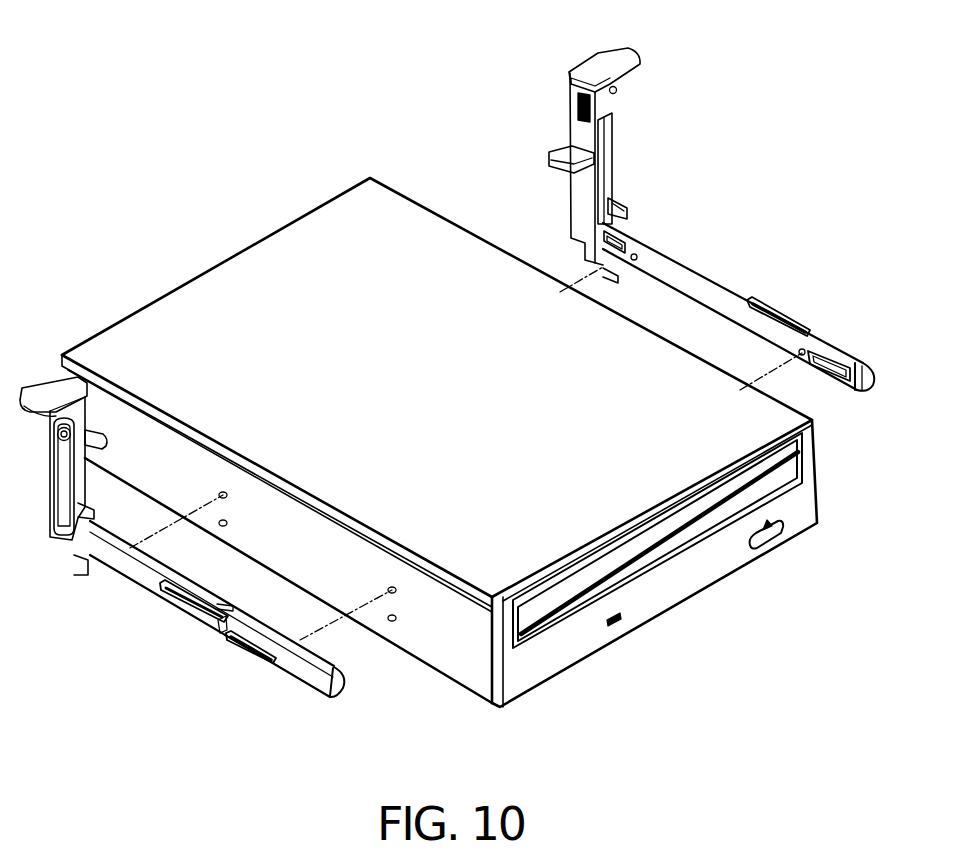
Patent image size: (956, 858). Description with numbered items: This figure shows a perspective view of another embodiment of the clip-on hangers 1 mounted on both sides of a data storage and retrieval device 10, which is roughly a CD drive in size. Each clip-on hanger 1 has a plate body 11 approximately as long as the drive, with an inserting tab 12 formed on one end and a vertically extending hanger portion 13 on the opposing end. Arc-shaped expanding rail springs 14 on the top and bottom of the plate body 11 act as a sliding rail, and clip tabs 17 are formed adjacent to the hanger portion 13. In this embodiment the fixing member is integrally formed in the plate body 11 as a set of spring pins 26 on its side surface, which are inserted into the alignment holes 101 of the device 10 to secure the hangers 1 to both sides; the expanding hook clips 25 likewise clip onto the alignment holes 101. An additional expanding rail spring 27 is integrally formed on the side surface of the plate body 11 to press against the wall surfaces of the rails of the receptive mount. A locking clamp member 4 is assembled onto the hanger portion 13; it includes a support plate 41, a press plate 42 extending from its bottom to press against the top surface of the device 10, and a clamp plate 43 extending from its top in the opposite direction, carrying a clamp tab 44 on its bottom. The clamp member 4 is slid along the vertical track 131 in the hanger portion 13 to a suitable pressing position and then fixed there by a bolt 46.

The clip-on hanger 1 is at (483, 477).
The locking clamp member 4 is at (368, 312).
The data storage and retrieval device 10 is at (228, 277).
The plate body 11 is at (683, 265).
The inserting tab 12 is at (873, 385).
The hanger portion 13 is at (583, 193).
The expanding rail springs 14 is at (780, 316).
The clip tabs 17 is at (612, 178).
The expanding hook clips 25 is at (597, 232).
The spring pins 26 is at (815, 365).
The expanding rail spring 27 is at (170, 600).
The support plate 41 is at (576, 120).
The press plate 42 is at (560, 158).
The clamp plate 43 is at (600, 65).
The clamp tab 44 is at (642, 86).
The bolt 46 is at (62, 434).
The alignment holes 101 is at (390, 596).
The vertical track 131 is at (73, 470).